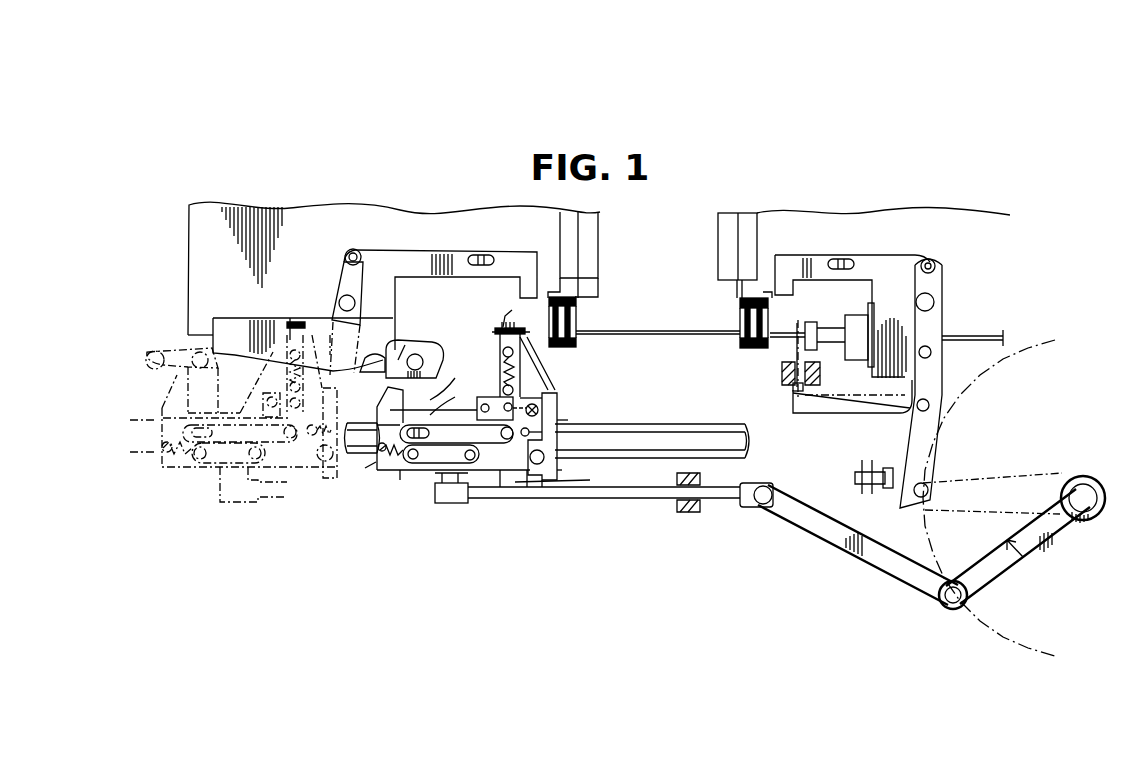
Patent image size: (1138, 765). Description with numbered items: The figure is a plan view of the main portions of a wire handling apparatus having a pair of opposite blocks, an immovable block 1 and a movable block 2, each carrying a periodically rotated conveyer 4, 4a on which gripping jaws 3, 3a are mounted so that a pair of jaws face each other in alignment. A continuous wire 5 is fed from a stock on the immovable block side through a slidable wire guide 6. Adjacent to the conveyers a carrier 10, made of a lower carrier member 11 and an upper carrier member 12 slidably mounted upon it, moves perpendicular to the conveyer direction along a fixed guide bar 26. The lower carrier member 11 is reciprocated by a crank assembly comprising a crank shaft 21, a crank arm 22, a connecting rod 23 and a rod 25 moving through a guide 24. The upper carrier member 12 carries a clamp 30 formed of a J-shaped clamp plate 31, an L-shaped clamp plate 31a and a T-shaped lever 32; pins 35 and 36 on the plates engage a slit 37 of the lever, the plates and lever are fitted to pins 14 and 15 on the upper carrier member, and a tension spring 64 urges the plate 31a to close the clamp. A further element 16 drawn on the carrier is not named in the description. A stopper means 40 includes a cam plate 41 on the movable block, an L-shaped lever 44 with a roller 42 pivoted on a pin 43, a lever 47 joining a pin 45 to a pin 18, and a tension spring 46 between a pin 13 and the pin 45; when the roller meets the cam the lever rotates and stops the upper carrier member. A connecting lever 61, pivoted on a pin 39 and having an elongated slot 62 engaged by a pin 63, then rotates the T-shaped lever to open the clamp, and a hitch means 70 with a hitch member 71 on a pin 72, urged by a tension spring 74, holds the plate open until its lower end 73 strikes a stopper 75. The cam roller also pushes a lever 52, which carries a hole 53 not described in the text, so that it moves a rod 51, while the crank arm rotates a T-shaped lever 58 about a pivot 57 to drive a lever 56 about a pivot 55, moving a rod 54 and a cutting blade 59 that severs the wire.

The immovable block 1 is at (862, 215).
The movable block 2 is at (422, 214).
The gripping jaw 3 is at (738, 320).
The gripping jaw 3a is at (578, 318).
The conveyer 4 is at (740, 231).
The conveyer 4a is at (590, 230).
The continuous wire 5 is at (675, 331).
The slidable wire guide 6 is at (808, 330).
The carrier 10 is at (438, 480).
The lower carrier member 11 is at (395, 430).
The upper carrier member 12 is at (528, 490).
The pin 13 is at (358, 468).
The pin 14 is at (522, 345).
The pin 15 is at (550, 383).
The pivot 16 is at (522, 455).
The pin 18 is at (470, 500).
The crank shaft 21 is at (1080, 482).
The crank arm 22 is at (980, 565).
The connecting rod 23 is at (830, 540).
The guide 24 is at (700, 505).
The rod 25 is at (660, 500).
The guide bar 26 is at (362, 430).
The clamp 30 is at (496, 328).
The J-shaped clamp plate 31 is at (505, 322).
The L-shaped clamp plate 31a is at (532, 346).
The T-shaped lever 32 is at (456, 433).
The pin 35 is at (503, 352).
The pin 36 is at (557, 400).
The slit 37 is at (440, 377).
The pin 39 is at (502, 490).
The stopper means 40 is at (404, 344).
The cam plate 41 is at (245, 330).
The roller 42 is at (368, 356).
The pin 43 is at (385, 372).
The L-shaped lever 44 is at (398, 348).
The pin 45 is at (402, 480).
The tension spring 46 is at (382, 460).
The lever 47 is at (450, 506).
The rod 51 is at (402, 260).
The lever 52 is at (340, 270).
The hole 53 is at (339, 303).
The rod 54 is at (495, 334).
The pivot 55 is at (935, 303).
The lever 56 is at (938, 285).
The pivot 57 is at (936, 412).
The T-shaped lever 58 is at (938, 357).
The cutting blade 59 is at (782, 370).
The connecting lever 61 is at (474, 460).
The elongated slot 62 is at (414, 466).
The pin 63 is at (445, 394).
The tension spring 64 is at (538, 376).
The hitch means 70 is at (590, 480).
The hitch member 71 is at (556, 442).
The pin 72 is at (558, 465).
The lower end 73 is at (548, 485).
The tension spring 74 is at (570, 420).
The stopper 75 is at (853, 478).